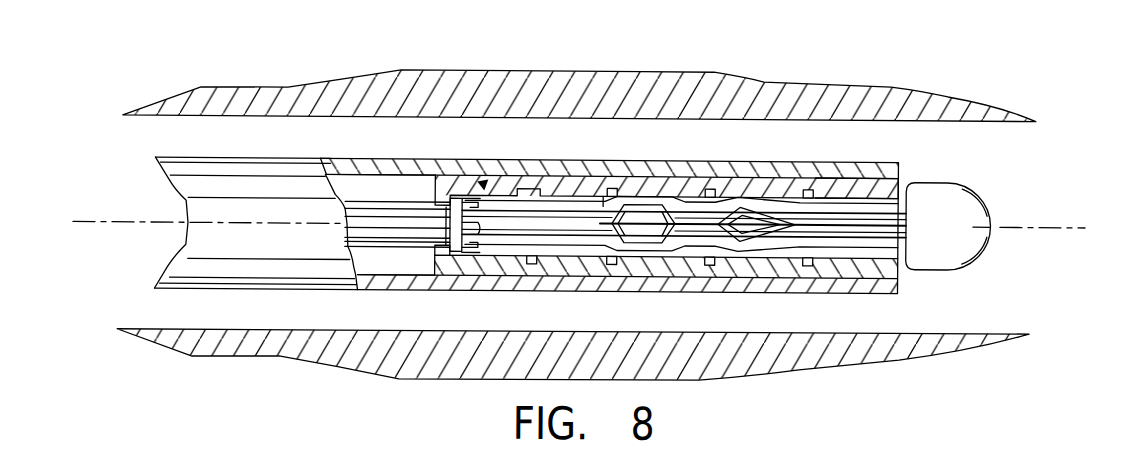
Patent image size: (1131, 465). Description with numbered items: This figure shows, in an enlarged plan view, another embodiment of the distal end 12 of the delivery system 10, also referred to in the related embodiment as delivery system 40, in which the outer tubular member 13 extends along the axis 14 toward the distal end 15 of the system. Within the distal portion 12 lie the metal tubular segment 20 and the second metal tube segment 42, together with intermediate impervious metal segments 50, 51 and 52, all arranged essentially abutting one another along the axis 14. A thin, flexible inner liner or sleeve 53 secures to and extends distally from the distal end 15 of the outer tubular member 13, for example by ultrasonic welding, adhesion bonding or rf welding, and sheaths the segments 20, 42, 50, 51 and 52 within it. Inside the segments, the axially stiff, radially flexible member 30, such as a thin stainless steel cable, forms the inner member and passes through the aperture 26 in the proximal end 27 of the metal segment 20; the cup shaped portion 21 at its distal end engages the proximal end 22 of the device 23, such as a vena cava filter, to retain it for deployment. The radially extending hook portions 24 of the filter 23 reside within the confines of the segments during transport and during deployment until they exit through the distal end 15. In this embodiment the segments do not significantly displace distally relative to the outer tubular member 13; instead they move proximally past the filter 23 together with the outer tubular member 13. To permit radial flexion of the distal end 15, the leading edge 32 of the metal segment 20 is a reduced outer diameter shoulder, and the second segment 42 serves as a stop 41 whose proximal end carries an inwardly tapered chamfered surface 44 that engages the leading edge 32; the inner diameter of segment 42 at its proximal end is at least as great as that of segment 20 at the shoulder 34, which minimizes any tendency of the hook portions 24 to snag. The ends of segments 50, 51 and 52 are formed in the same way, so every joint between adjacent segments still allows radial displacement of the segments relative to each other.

The delivery system 10 is at (318, 65).
The distal portion 12 is at (816, 148).
The outer tubular member 13 is at (185, 156).
The axis 14 is at (1026, 221).
The distal end 15 is at (914, 280).
The metal tubular segment 20 is at (450, 250).
The cup shaped portion 21 is at (441, 242).
The proximal end 22 is at (527, 177).
The device 23 is at (603, 192).
The hook portions 24 is at (483, 180).
The aperture 26 is at (428, 246).
The proximal end 27 is at (405, 173).
The axially stiff, radially flexible member 30 is at (372, 212).
The leading edge 32 is at (560, 188).
The shoulder 34 is at (530, 270).
The delivery system 40 is at (692, 143).
The stop 41 is at (858, 266).
The second metal tube segment 42 is at (875, 173).
The chamfered surface 44 is at (795, 272).
The intermediate impervious metal segment 50 is at (588, 178).
The intermediate impervious metal segment 51 is at (652, 180).
The intermediate impervious metal segment 52 is at (762, 176).
The inner liner or sleeve 53 is at (687, 272).